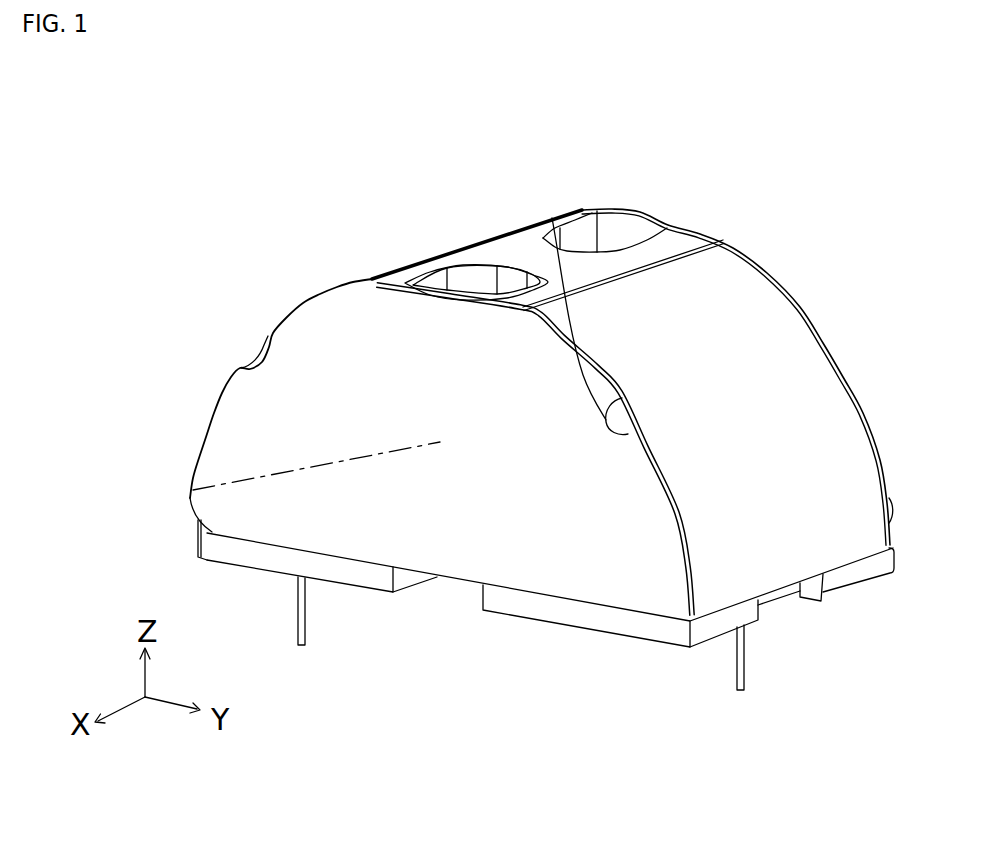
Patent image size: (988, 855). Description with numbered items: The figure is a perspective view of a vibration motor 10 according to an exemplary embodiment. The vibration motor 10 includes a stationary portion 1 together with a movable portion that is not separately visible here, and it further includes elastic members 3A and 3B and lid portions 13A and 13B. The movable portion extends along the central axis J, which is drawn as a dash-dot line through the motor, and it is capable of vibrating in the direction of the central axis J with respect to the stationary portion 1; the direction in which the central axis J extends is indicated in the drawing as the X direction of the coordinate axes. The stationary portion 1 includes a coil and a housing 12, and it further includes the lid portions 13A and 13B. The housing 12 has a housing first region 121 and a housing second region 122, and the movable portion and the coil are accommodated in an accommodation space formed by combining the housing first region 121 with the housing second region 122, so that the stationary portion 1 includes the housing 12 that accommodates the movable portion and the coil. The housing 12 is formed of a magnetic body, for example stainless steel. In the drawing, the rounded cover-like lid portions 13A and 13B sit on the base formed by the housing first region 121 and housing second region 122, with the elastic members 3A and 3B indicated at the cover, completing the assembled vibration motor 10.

The vibration motor 10 is at (794, 118).
The stationary portion 1 is at (640, 787).
The lid portion 13A is at (593, 578).
The lid portion 13B is at (893, 515).
The elastic member 3A is at (552, 218).
The elastic member 3B is at (835, 346).
The housing 12 is at (803, 723).
The housing first region 121 is at (700, 633).
The housing second region 122 is at (772, 560).
The central axis J is at (185, 493).